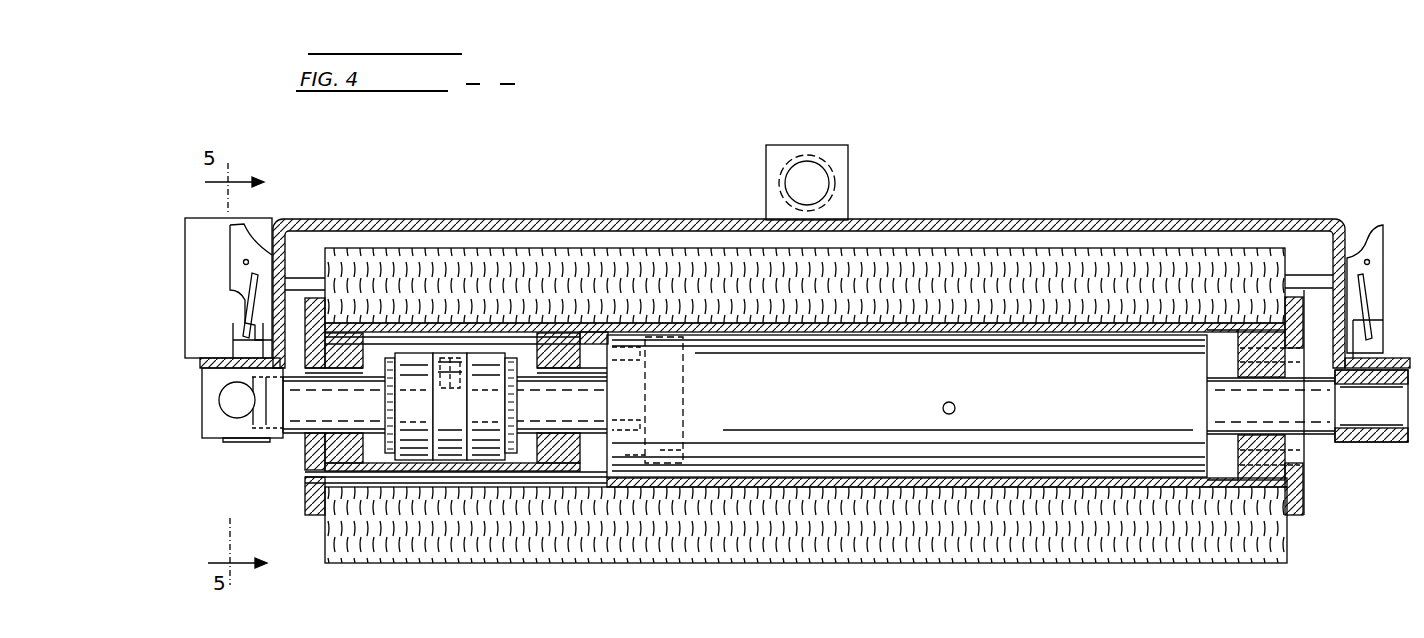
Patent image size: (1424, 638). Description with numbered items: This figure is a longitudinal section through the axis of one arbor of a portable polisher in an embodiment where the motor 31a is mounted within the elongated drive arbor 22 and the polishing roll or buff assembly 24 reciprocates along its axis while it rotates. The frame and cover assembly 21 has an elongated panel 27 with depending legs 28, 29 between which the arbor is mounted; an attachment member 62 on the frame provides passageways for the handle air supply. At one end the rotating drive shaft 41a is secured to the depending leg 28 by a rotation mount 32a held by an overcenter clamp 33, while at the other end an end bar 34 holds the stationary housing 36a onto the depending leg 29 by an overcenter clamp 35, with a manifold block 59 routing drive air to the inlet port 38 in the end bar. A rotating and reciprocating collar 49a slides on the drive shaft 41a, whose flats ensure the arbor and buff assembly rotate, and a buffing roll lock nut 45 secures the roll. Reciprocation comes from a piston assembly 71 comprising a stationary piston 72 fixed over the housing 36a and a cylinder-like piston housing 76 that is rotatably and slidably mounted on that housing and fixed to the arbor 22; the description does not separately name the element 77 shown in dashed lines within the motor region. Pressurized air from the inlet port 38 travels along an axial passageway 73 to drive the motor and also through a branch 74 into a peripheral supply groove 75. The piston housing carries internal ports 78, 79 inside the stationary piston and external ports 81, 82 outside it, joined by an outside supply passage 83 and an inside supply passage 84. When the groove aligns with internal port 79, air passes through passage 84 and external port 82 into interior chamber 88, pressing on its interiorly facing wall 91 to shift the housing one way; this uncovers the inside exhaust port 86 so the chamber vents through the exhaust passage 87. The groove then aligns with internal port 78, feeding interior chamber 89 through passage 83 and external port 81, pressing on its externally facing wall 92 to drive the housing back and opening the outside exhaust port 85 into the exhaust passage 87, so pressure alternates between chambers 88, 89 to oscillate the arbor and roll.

The frame and cover assembly 21 is at (1152, 213).
The elongated drive arbor 22 is at (1226, 480).
The polishing roll or buff assembly 24 is at (1287, 533).
The elongated panel 27 is at (1083, 220).
The depending leg 28 is at (1333, 220).
The depending leg 29 is at (300, 232).
The motor 31a is at (840, 420).
The rotation mount 32a is at (1356, 422).
The overcenter clamp 33 is at (1365, 312).
The end bar 34 is at (215, 440).
The overcenter clamp 35 is at (240, 318).
The stationary housing 36a is at (300, 430).
The inlet port 38 is at (248, 410).
The rotating drive shaft 41a is at (1260, 412).
The buffing roll lock nut 45 is at (318, 512).
The rotating and reciprocating collar 49a is at (1305, 360).
The manifold block 59 is at (214, 276).
The attachment member 62 is at (840, 195).
The piston assembly 71 is at (380, 468).
The stationary piston 72 is at (392, 408).
The axial passageway 73 is at (290, 410).
The branch 74 is at (450, 385).
The peripheral supply groove 75 is at (441, 369).
The piston housing 76 is at (307, 470).
The piston 77 is at (588, 362).
The internal port 78 is at (428, 350).
The internal port 79 is at (484, 350).
The external port 81 is at (372, 333).
The external port 82 is at (520, 350).
The outside supply passage 83 is at (408, 340).
The inside supply passage 84 is at (510, 355).
The outside exhaust port 85 is at (395, 466).
The inside exhaust port 86 is at (462, 470).
The exhaust passage 87 is at (430, 472).
The interior chamber 88 is at (528, 465).
The interior chamber 89 is at (355, 345).
The interiorly facing wall 91 is at (560, 345).
The externally facing wall 92 is at (365, 455).